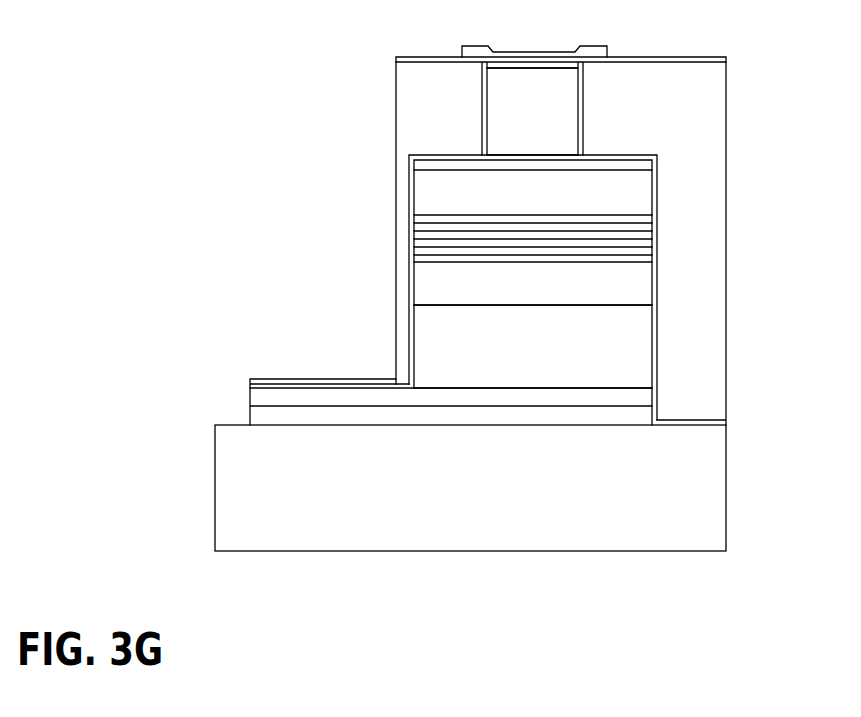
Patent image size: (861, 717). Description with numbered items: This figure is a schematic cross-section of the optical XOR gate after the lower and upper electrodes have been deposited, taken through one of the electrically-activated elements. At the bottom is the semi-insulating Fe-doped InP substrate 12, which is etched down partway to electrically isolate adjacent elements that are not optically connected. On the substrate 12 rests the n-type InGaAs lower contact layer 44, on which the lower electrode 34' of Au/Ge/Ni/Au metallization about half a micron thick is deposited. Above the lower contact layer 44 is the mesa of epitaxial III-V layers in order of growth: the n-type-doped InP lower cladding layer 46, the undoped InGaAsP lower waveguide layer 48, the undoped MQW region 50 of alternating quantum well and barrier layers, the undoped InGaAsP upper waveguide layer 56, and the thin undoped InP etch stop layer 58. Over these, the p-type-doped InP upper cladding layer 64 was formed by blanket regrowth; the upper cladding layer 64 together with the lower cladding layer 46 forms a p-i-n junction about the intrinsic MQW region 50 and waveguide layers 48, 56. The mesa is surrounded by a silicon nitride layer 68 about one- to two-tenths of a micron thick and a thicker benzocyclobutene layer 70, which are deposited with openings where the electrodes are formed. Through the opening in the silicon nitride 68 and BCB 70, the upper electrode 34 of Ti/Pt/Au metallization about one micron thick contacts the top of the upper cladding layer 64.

The substrate 12 is at (252, 513).
The lower contact layer 44 is at (250, 397).
The lower electrode 34' is at (329, 360).
The benzocyclobutene (BCB) layer 70 is at (450, 135).
The InP etch stop layer 58 is at (543, 158).
The upper waveguide layer 56 is at (460, 204).
The MQW region 50 is at (660, 215).
The lower waveguide layer 48 is at (460, 295).
The lower cladding layer 46 is at (460, 354).
The upper cladding layer 64 is at (520, 113).
The silicon nitride layer 68 is at (443, 62).
The upper electrode 34 is at (534, 31).